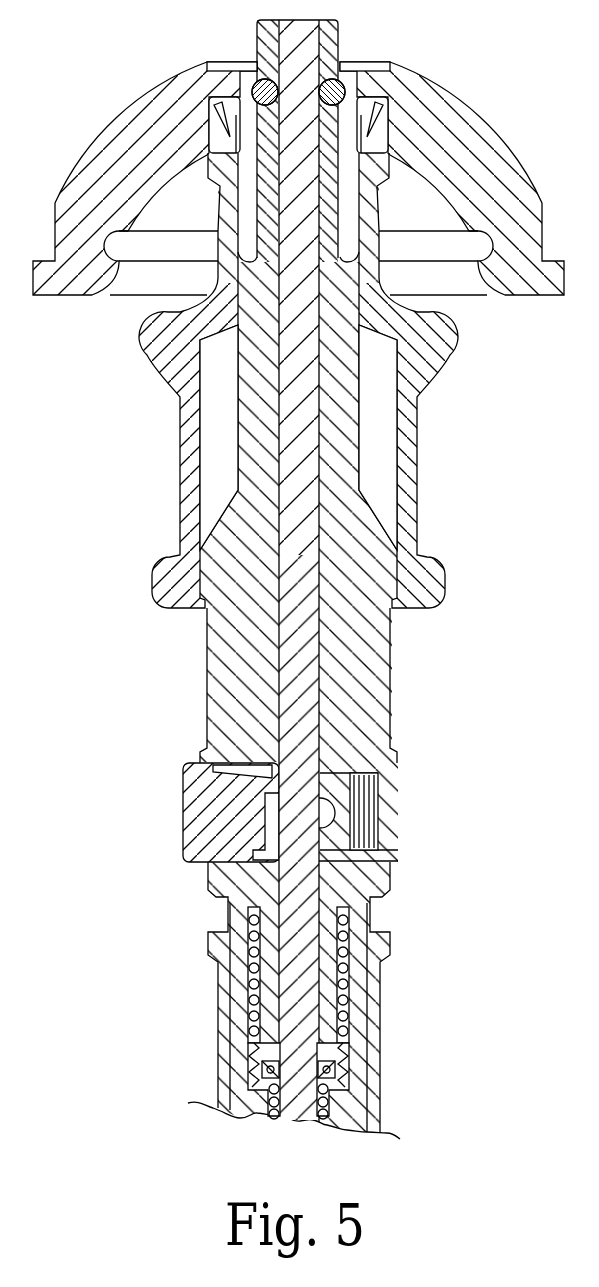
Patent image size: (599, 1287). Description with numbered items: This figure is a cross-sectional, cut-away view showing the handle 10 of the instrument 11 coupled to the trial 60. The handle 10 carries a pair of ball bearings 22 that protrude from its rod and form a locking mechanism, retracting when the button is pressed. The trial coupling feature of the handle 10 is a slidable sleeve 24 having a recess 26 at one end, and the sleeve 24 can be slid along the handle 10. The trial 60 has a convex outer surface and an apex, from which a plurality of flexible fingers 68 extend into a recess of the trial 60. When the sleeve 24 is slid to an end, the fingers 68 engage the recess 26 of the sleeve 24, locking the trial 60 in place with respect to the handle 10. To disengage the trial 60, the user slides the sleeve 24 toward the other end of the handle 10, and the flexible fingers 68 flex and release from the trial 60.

The handle 10 is at (448, 462).
The instrument 11 is at (501, 481).
The ball bearings 22 is at (337, 62).
The slidable sleeve 24 is at (418, 400).
The recess 26 is at (362, 128).
The trial 60 is at (478, 312).
The flexible fingers 68 is at (362, 128).